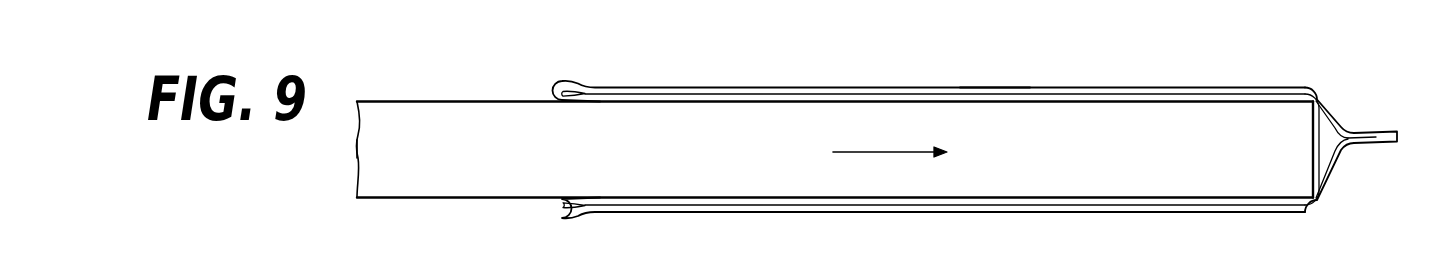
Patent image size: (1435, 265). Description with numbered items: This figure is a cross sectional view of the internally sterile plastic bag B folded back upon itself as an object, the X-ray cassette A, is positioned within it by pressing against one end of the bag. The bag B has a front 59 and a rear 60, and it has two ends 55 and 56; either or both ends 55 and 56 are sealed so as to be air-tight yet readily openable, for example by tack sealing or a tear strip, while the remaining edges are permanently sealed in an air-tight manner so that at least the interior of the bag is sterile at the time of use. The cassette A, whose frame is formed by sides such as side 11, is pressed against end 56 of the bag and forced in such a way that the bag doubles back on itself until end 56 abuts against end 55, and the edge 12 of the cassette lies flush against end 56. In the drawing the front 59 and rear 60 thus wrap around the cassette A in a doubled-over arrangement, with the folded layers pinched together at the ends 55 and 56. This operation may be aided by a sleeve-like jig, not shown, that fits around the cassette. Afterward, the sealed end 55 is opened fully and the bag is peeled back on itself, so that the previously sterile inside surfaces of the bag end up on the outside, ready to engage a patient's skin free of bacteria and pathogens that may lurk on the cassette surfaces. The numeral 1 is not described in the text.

The cassette side 11 is at (741, 160).
The cassette end 12 is at (1312, 135).
The bag end 55 is at (1373, 137).
The bag end 56 is at (1326, 161).
The bag front 59 is at (1073, 88).
The bag rear 60 is at (983, 200).
The partial numeral 1 is at (851, 260).
The X-ray cassette A is at (358, 147).
The plastic bag B is at (992, 87).